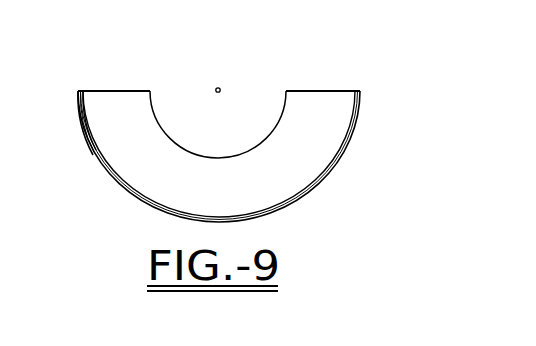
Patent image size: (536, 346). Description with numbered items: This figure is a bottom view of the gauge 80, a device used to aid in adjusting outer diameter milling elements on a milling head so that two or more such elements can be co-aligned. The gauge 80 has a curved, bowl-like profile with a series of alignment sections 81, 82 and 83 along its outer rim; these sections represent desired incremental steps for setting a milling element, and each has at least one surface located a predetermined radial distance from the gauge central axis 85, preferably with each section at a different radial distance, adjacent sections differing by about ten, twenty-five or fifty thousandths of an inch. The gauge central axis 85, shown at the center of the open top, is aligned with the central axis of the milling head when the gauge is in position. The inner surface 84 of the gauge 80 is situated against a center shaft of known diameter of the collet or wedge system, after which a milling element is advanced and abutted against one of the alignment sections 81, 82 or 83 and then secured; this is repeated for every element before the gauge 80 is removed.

The gauge 80 is at (303, 198).
The alignment section 81 is at (85, 133).
The alignment section 82 is at (104, 168).
The alignment section 83 is at (127, 191).
The inner surface 84 is at (222, 157).
The gauge central axis 85 is at (218, 88).